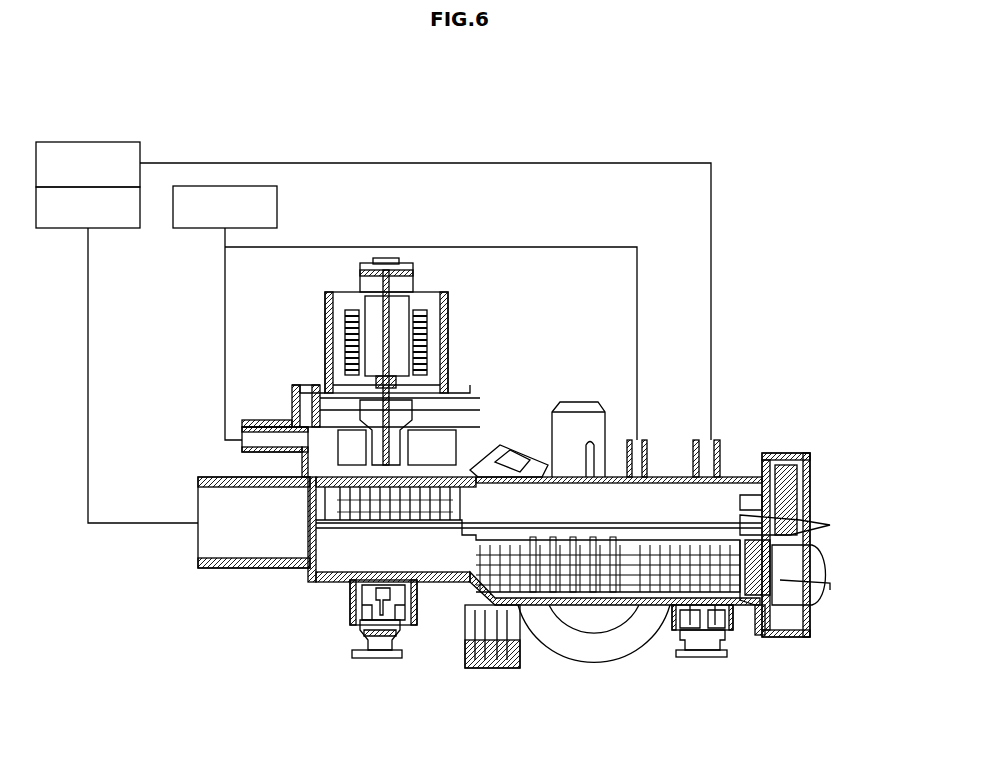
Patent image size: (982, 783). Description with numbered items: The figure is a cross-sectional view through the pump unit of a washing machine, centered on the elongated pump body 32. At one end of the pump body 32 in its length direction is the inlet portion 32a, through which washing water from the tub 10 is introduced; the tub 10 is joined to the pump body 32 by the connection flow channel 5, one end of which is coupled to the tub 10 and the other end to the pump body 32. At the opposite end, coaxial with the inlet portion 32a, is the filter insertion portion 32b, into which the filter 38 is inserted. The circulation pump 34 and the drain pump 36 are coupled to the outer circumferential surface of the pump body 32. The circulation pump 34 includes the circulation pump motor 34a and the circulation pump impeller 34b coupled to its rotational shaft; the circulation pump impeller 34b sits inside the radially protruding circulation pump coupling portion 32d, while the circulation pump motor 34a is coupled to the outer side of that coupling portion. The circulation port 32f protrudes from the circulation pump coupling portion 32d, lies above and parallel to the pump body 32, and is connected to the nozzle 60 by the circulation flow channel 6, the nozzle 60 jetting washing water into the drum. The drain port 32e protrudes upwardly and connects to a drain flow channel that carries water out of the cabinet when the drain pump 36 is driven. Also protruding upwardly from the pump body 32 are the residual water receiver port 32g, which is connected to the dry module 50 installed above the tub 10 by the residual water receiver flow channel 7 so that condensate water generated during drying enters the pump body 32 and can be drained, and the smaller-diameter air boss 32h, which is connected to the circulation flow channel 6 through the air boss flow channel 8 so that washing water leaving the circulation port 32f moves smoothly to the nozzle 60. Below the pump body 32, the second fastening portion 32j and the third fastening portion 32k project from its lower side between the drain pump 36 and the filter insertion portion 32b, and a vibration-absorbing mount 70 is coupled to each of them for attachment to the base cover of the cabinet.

The connection flow channel 5 is at (88, 341).
The circulation flow channel 6 is at (225, 323).
The residual water receiver flow channel 7 is at (711, 243).
The air boss flow channel 8 is at (637, 247).
The tub 10 is at (60, 228).
The pump body 32 is at (322, 582).
The inlet portion 32a is at (240, 570).
The filter insertion portion 32b is at (785, 640).
The circulation pump coupling portion 32d is at (300, 462).
The drain port 32e is at (590, 402).
The circulation port 32f is at (262, 420).
The residual water receiver port 32g is at (740, 440).
The air boss 32h is at (645, 440).
The second fastening portion 32j is at (418, 625).
The third fastening portion 32k is at (672, 630).
The circulation pump 34 is at (427, 361).
The circulation pump motor 34a is at (448, 310).
The circulation pump impeller 34b is at (430, 438).
The drain pump 36 is at (515, 440).
The filter 38 is at (818, 583).
The dry module 50 is at (118, 142).
The nozzle 60 is at (277, 206).
The mount 70 is at (710, 658).